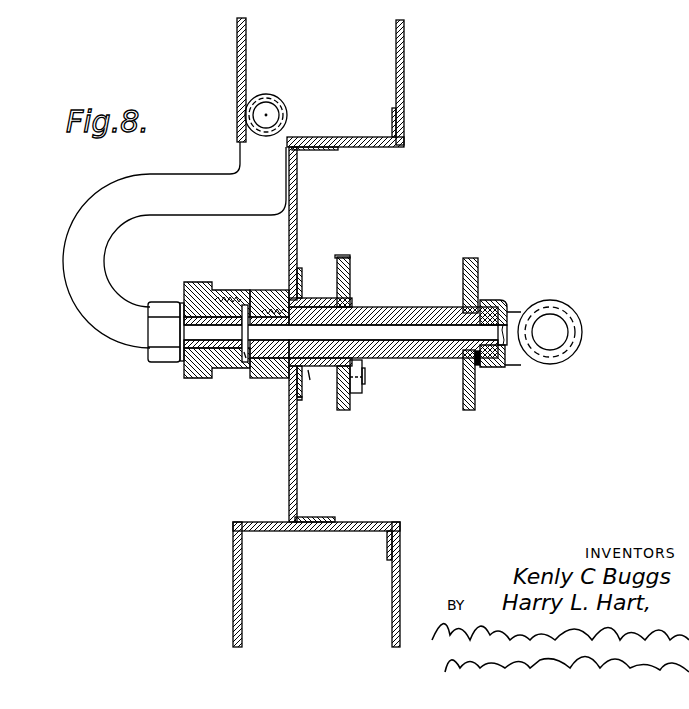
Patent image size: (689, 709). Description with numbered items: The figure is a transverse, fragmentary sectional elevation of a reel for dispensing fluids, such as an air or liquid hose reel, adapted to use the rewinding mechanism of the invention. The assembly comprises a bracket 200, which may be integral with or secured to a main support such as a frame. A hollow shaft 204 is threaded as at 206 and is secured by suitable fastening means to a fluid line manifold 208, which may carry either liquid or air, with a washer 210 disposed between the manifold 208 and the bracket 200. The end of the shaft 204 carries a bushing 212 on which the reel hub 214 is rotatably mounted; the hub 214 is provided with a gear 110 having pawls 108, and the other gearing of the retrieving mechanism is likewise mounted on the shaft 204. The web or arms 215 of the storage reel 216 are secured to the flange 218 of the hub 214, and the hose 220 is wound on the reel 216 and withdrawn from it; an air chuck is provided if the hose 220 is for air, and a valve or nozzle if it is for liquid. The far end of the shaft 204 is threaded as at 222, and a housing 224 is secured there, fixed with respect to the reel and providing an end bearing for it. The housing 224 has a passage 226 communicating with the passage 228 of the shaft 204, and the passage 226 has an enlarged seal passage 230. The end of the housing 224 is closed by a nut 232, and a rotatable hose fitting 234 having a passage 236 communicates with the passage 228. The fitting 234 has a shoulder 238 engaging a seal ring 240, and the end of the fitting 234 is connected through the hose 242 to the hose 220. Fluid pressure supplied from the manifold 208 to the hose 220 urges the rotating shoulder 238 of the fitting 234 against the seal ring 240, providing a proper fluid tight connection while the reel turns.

The pawls 108 is at (361, 371).
The gear 110 is at (351, 269).
The bracket 200 is at (476, 411).
The hollow shaft 204 is at (430, 352).
The threads 206 is at (503, 366).
The fluid line manifold 208 is at (582, 325).
The washer 210 is at (481, 368).
The bushing 212 is at (345, 403).
The reel hub 214 is at (310, 372).
The web or arms 215 is at (298, 478).
The storage reel 216 is at (310, 531).
The flange 218 is at (289, 405).
The hose 220 is at (283, 108).
The threads 222 is at (273, 310).
The housing 224 is at (232, 380).
The passage 226 is at (245, 304).
The passage 228 is at (428, 332).
The enlarged seal passage 230 is at (236, 298).
The nut 232 is at (190, 357).
The rotatable hose fitting 234 is at (179, 355).
The passage 236 is at (186, 318).
The shoulder 238 is at (246, 362).
The seal ring 240 is at (220, 370).
The hose 242 is at (63, 255).